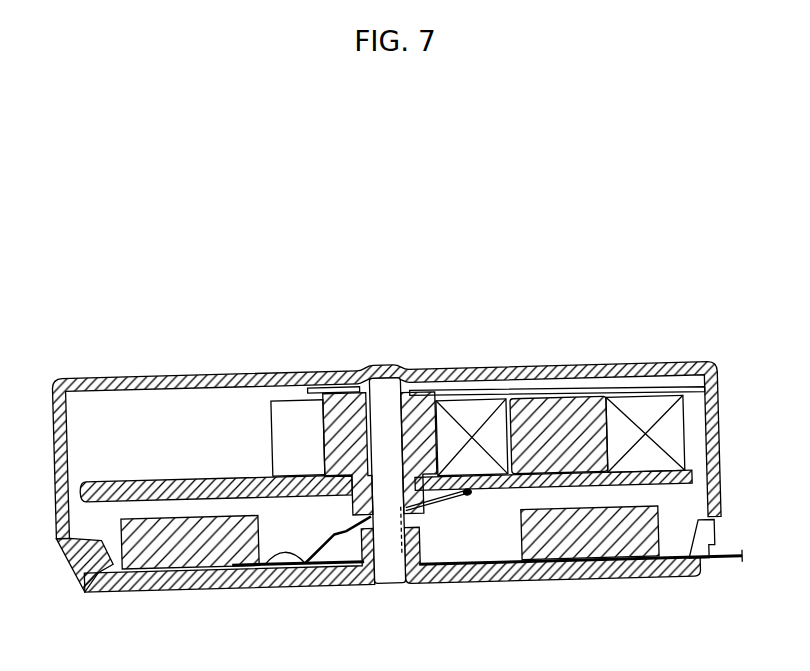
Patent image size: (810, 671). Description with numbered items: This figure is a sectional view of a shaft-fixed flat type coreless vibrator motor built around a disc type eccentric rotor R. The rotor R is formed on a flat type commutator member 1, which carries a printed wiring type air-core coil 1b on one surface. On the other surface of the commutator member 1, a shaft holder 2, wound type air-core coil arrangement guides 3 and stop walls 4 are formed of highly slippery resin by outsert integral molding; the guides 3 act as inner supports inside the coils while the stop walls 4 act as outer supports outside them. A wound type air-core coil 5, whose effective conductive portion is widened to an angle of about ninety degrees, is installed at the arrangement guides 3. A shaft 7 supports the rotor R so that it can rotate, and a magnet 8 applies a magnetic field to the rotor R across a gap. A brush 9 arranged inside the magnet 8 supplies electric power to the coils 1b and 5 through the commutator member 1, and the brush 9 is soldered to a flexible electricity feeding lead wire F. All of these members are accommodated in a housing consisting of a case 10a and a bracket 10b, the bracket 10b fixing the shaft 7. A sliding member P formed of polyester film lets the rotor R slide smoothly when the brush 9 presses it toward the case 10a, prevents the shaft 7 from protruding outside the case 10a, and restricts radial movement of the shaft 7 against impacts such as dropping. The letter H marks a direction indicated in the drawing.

The commutator member 1 is at (100, 482).
The printed wiring type air-core coil 1b is at (180, 478).
The shaft holder 2 is at (343, 408).
The wound type air-core coil arrangement guide 3 is at (541, 403).
The stop wall 4 is at (295, 420).
The wound type air-core coil 5 is at (647, 400).
The shaft 7 is at (387, 583).
The magnet 8 is at (610, 547).
The brush 9 is at (447, 510).
The case 10a is at (573, 365).
The bracket 10b is at (555, 570).
The sliding member P is at (442, 397).
The eccentric rotor R is at (690, 447).
The height direction H is at (37, 483).
The flexible electricity feeding lead wire F is at (718, 560).